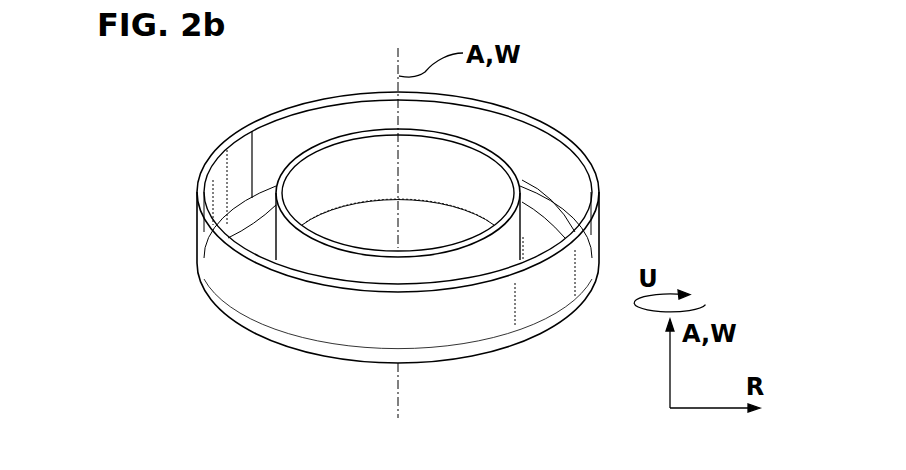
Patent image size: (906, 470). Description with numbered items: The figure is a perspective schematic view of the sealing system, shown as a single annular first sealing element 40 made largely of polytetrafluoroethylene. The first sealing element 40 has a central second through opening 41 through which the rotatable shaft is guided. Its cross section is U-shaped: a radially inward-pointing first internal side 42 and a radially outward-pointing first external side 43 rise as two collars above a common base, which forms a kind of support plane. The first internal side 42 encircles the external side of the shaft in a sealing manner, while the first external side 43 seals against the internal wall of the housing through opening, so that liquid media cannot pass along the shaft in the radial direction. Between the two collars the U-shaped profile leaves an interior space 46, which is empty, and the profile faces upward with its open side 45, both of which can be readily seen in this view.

The first sealing element 40 is at (602, 189).
The second through opening 41 is at (457, 189).
The first internal side 42 is at (338, 163).
The first external side 43 is at (187, 234).
The open side 45 is at (546, 180).
The interior space 46 is at (242, 155).